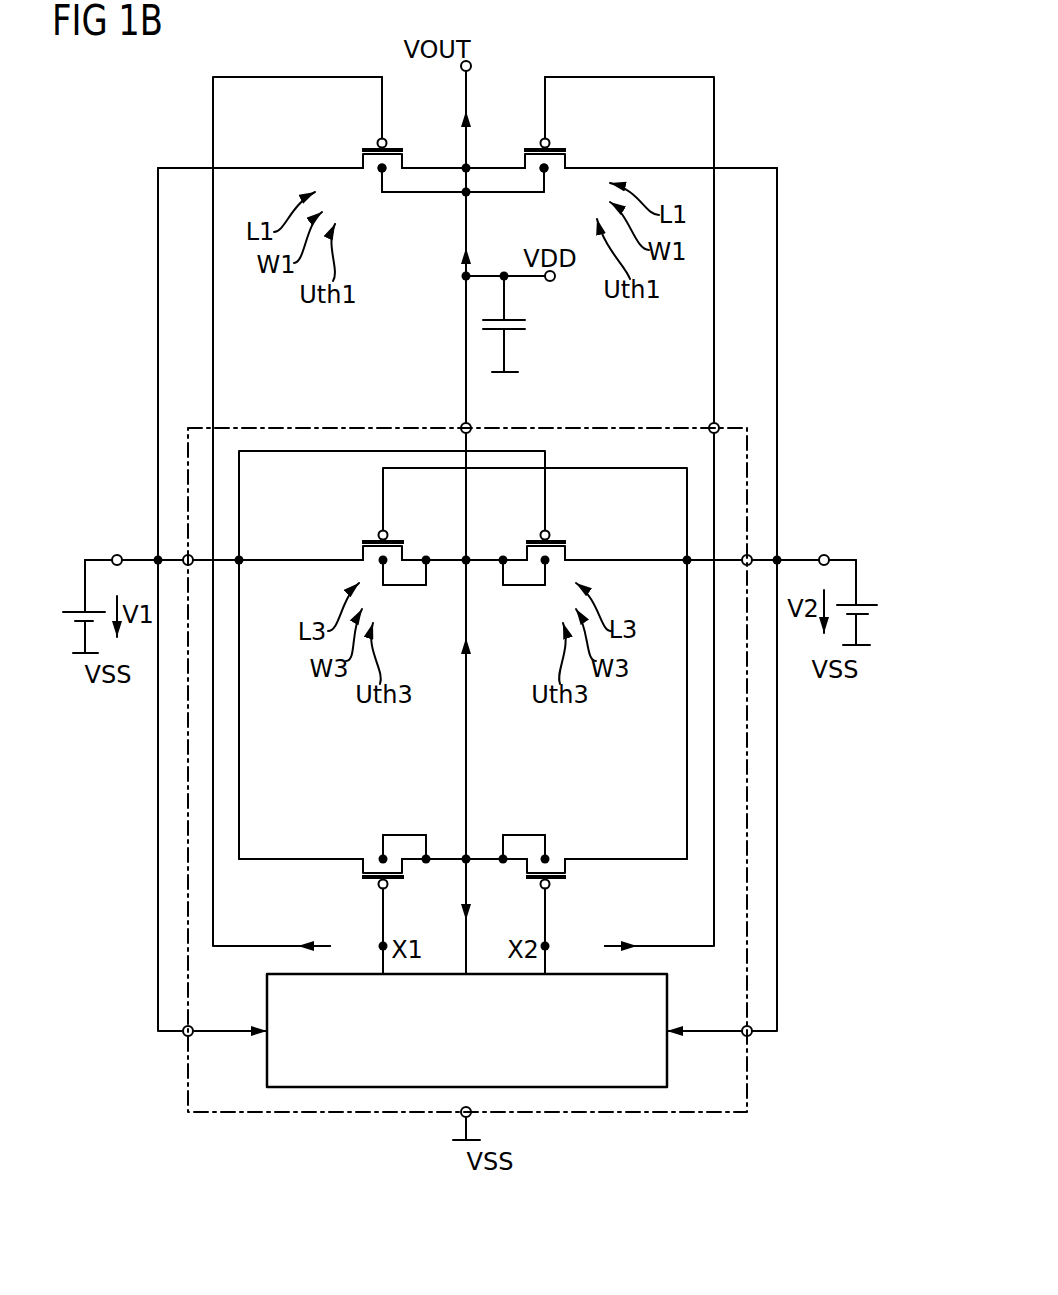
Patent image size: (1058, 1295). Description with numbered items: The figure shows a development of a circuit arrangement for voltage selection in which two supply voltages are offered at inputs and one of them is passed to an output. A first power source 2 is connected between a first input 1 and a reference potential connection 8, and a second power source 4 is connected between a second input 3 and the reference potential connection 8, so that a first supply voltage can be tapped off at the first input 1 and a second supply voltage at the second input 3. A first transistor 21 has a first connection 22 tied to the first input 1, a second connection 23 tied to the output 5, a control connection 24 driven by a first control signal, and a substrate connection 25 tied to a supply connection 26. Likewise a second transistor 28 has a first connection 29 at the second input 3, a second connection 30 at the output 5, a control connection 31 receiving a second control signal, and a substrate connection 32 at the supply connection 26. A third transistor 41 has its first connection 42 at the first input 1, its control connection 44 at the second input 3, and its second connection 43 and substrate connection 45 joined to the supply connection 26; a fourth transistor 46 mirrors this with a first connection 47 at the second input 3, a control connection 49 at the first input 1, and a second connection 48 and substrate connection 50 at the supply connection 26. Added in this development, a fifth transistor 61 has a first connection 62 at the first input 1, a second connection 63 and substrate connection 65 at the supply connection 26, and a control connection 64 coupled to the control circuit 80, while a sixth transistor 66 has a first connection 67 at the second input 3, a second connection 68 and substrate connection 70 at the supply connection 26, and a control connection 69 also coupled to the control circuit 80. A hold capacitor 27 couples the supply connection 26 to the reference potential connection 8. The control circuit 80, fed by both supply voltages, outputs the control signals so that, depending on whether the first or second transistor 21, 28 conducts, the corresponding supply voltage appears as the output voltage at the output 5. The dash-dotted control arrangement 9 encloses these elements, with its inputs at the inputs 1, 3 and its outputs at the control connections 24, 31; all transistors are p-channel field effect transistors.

The first input 1 is at (115, 555).
The first power source 2 is at (85, 587).
The second input 3 is at (826, 555).
The second power source 4 is at (856, 582).
The output 5 is at (469, 61).
The reference potential connection 8 is at (517, 372).
The control arrangement 9 is at (628, 428).
The first transistor 21 is at (363, 144).
The first connection of the first transistor 22 is at (362, 160).
The second connection of the first transistor 23 is at (402, 160).
The control connection of the first transistor 24 is at (384, 134).
The substrate connection of the first transistor 25 is at (380, 173).
The supply connection 26 is at (554, 280).
The hold capacitor 27 is at (526, 329).
The second transistor 28 is at (566, 144).
The first connection of the second transistor 29 is at (566, 160).
The second connection of the second transistor 30 is at (525, 160).
The control connection of the second transistor 31 is at (544, 137).
The substrate connection of the second transistor 32 is at (548, 173).
The third transistor 41 is at (362, 533).
The first connection of the third transistor 42 is at (362, 553).
The second connection of the third transistor 43 is at (402, 553).
The control connection of the third transistor 44 is at (386, 533).
The substrate connection of the third transistor 45 is at (405, 587).
The fourth transistor 46 is at (568, 533).
The first connection of the fourth transistor 47 is at (566, 553).
The second connection of the fourth transistor 48 is at (526, 553).
The control connection of the fourth transistor 49 is at (543, 533).
The substrate connection of the fourth transistor 50 is at (525, 587).
The fifth transistor 61 is at (368, 853).
The first connection of the fifth transistor 62 is at (362, 868).
The second connection of the fifth transistor 63 is at (402, 868).
The control connection of the fifth transistor 64 is at (382, 891).
The substrate connection of the fifth transistor 65 is at (399, 835).
The sixth transistor 66 is at (560, 853).
The first connection of the sixth transistor 67 is at (566, 868).
The second connection of the sixth transistor 68 is at (527, 868).
The control connection of the sixth transistor 69 is at (547, 891).
The substrate connection of the sixth transistor 70 is at (523, 835).
The control circuit 80 is at (668, 995).